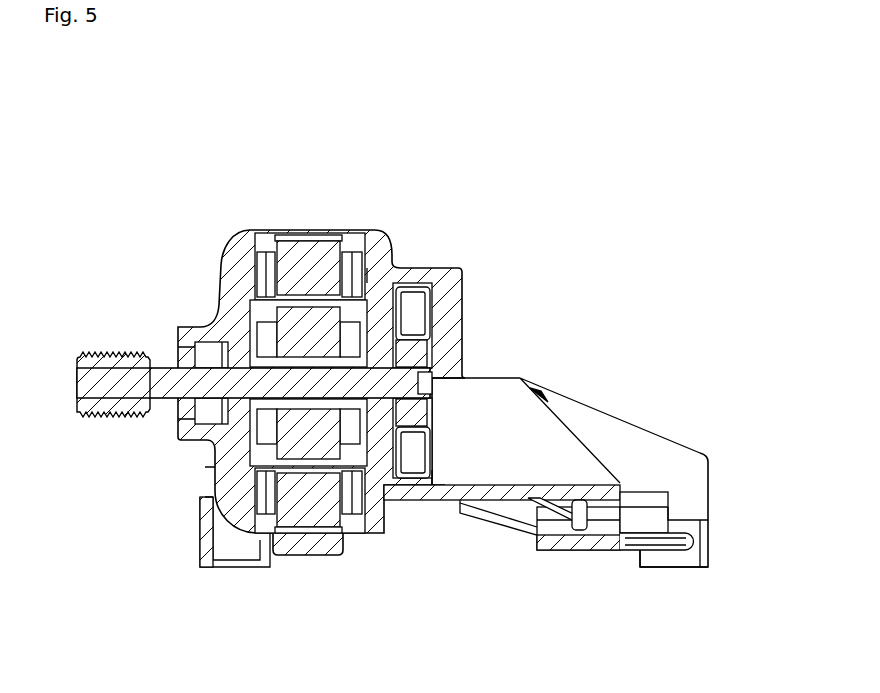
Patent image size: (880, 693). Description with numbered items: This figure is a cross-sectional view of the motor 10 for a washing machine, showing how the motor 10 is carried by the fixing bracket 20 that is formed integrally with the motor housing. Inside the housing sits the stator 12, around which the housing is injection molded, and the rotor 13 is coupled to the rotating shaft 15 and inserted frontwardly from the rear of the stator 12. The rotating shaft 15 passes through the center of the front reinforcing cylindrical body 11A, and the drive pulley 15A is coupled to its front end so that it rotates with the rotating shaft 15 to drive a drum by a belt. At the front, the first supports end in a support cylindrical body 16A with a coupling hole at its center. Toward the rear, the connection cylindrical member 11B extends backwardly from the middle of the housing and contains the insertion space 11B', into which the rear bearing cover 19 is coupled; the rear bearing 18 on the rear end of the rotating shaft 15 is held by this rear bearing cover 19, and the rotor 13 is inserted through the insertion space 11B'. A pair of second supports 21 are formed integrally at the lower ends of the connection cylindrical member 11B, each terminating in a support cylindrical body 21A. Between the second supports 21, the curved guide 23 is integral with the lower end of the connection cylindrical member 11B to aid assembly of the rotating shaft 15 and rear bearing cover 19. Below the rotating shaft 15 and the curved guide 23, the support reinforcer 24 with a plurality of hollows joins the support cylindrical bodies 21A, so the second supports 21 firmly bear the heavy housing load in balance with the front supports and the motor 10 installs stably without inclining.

The motor 10 is at (319, 156).
The front reinforcing cylindrical body 11A is at (204, 326).
The connection cylindrical member 11B is at (408, 337).
The insertion space 11B' is at (435, 515).
The stator 12 is at (297, 262).
The rotor 13 is at (305, 433).
The rotating shaft 15 is at (170, 395).
The drive pulley 15A is at (106, 350).
The support cylindrical body 16A is at (230, 568).
The rear bearing 18 is at (432, 347).
The rear bearing cover 19 is at (424, 302).
The fixing bracket 20 is at (615, 383).
The second support 21 is at (688, 458).
The support cylindrical body 21A is at (680, 568).
The curved guide 23 is at (508, 432).
The support reinforcer 24 is at (603, 523).